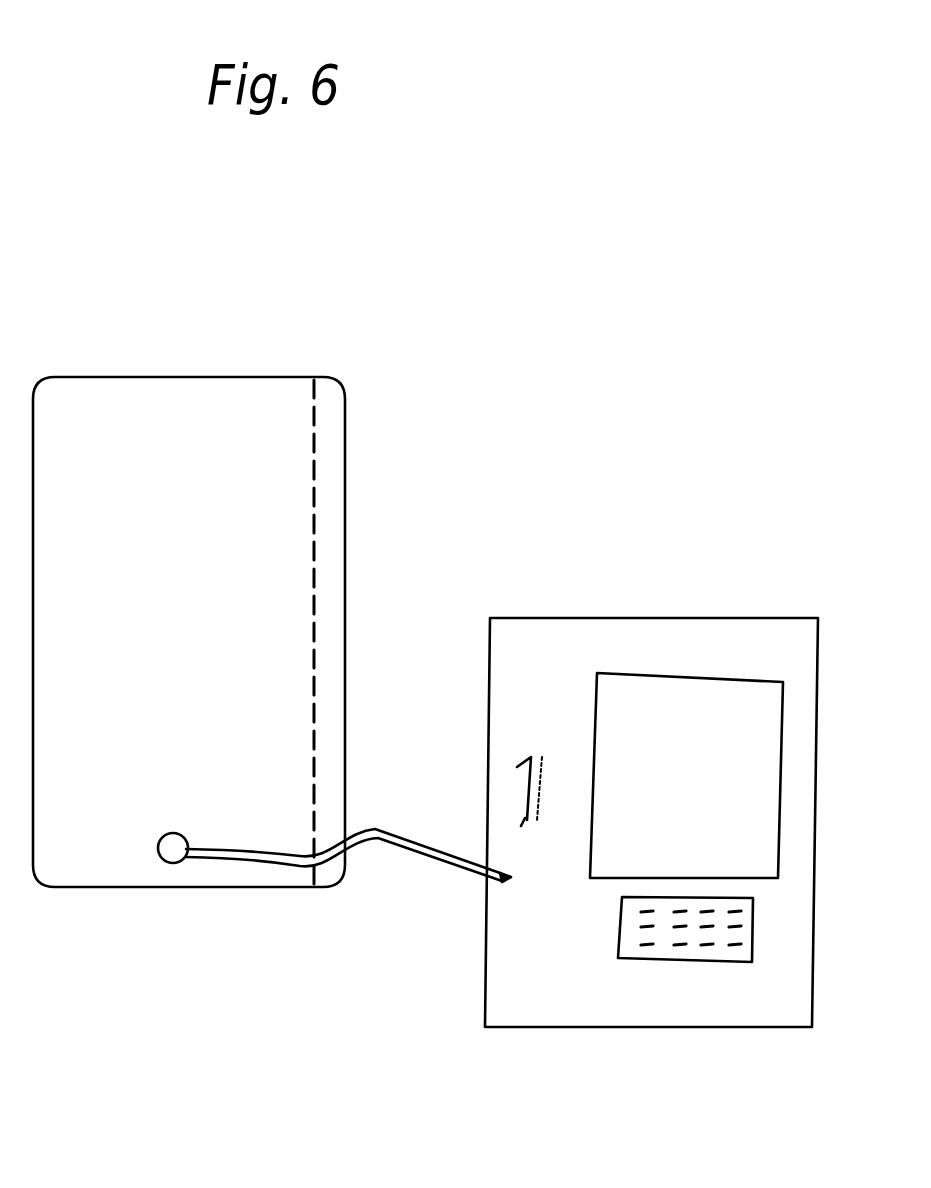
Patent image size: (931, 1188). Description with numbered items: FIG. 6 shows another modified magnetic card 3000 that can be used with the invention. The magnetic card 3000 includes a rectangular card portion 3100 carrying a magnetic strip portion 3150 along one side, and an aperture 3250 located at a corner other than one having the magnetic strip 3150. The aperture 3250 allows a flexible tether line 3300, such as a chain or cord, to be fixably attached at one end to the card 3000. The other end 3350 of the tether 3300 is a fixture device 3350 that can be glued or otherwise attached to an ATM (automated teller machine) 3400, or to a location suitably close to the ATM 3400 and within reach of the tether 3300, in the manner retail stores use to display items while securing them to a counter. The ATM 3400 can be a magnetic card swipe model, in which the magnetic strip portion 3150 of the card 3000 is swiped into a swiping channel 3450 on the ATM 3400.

The modified magnetic card 3000 is at (218, 301).
The rectangular card portion 3100 is at (253, 468).
The magnetic strip portion 3150 is at (335, 528).
The aperture 3250 is at (175, 830).
The flexible tether line 3300 is at (413, 843).
The fixture device 3350 is at (507, 877).
The ATM (automated teller machine) 3400 is at (627, 596).
The swiping channel 3450 is at (533, 822).